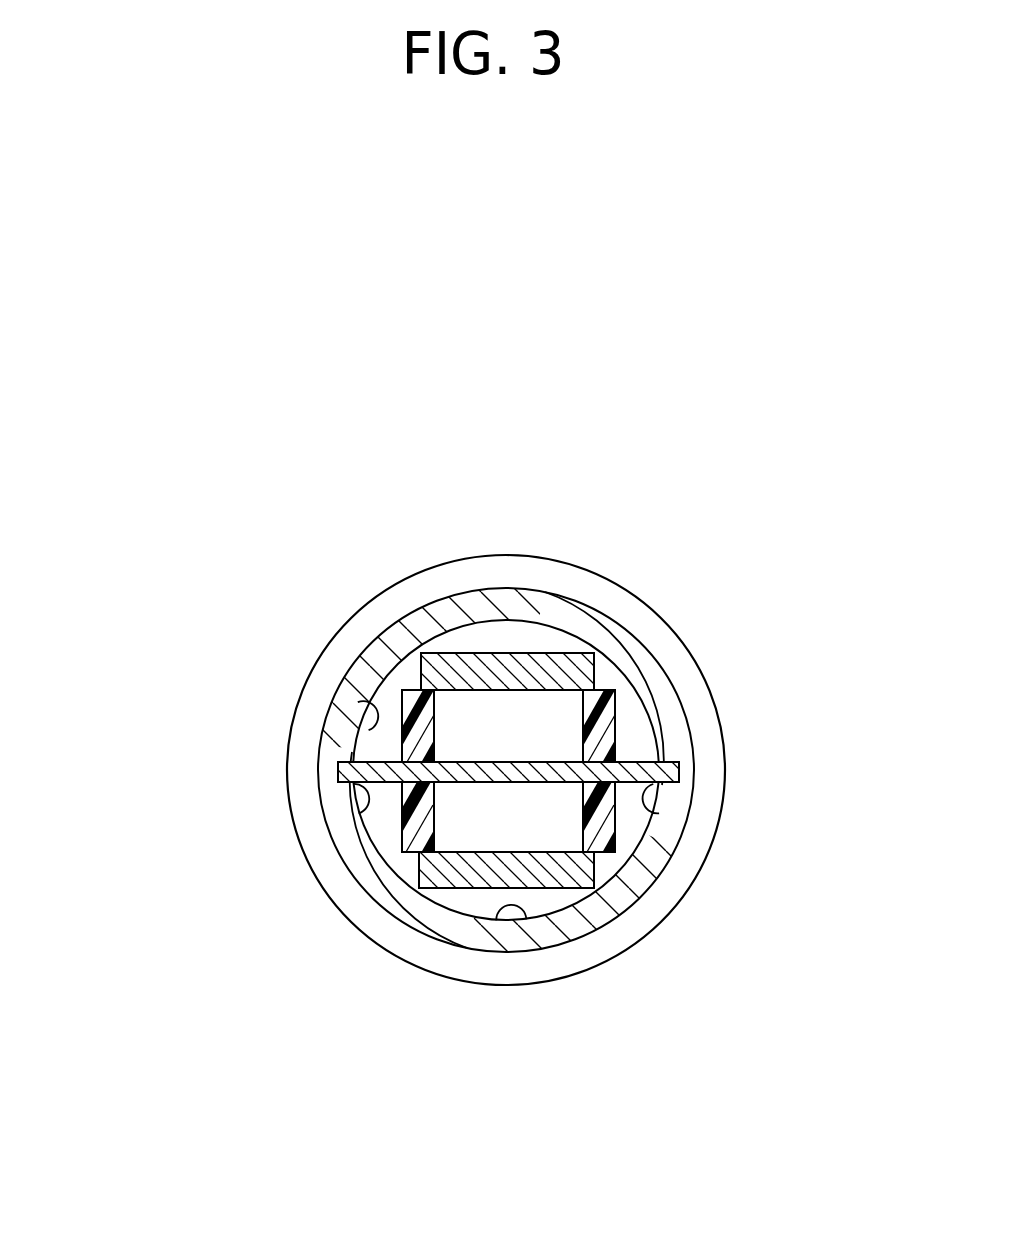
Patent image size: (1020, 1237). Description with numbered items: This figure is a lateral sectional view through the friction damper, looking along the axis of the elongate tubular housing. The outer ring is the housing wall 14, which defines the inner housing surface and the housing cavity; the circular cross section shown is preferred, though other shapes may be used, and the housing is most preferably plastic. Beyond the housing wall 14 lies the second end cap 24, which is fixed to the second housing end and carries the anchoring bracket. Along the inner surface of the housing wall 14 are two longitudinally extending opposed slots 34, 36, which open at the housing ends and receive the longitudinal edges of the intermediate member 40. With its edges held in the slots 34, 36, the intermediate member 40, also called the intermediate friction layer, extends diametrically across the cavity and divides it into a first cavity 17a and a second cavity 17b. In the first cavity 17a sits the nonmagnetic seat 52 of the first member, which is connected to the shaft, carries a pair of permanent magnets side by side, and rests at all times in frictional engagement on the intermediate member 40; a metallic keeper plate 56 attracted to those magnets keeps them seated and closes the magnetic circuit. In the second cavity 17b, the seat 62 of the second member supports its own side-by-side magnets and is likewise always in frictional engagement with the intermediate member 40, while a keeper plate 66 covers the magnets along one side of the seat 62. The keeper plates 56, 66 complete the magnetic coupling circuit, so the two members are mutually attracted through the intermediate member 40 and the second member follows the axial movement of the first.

The housing wall 14 is at (375, 877).
The first cavity 17a is at (356, 727).
The second cavity 17b is at (573, 940).
The second end cap 24 is at (678, 660).
The slot 34 is at (403, 808).
The slot 36 is at (660, 815).
The intermediate member 40 is at (528, 770).
The nonmagnetic seat 52 is at (406, 700).
The keeper plate 56 is at (500, 665).
The seat 62 is at (403, 808).
The keeper plate 66 is at (470, 865).